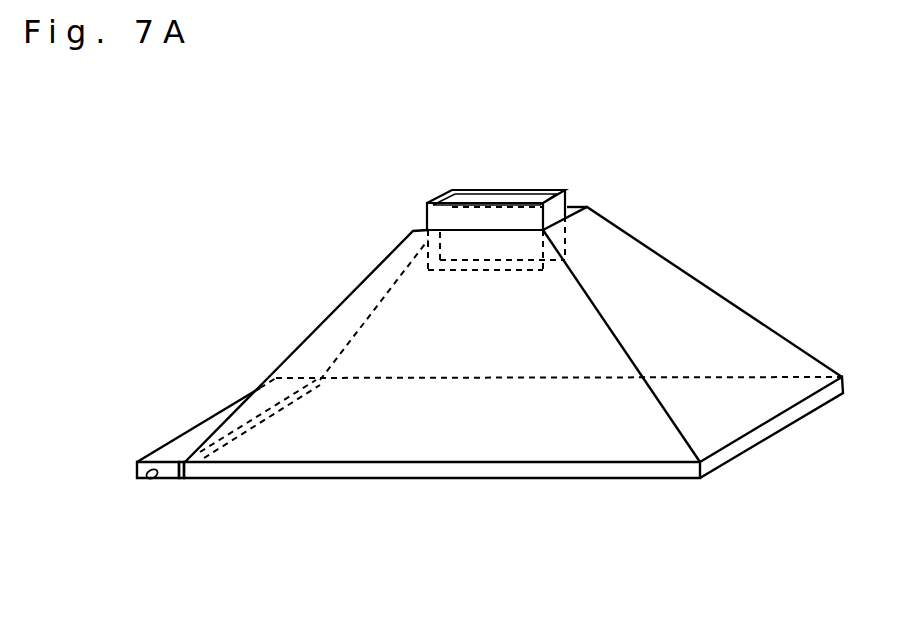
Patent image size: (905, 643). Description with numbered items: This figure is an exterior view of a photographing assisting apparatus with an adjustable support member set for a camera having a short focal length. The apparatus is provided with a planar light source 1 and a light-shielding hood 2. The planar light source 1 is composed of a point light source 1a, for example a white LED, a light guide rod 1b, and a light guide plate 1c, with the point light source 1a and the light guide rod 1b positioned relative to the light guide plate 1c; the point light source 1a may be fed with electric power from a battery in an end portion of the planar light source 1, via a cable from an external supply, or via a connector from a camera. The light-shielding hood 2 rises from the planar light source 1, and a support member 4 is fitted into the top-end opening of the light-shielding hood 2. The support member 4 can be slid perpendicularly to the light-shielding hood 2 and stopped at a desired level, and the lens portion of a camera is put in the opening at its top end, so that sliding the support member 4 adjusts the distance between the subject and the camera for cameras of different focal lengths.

The planar light source 1 is at (475, 484).
The point light source 1a is at (150, 478).
The light guide rod 1b is at (162, 479).
The light guide plate 1c is at (513, 463).
The light-shielding hood 2 is at (328, 319).
The support member 4 is at (543, 190).